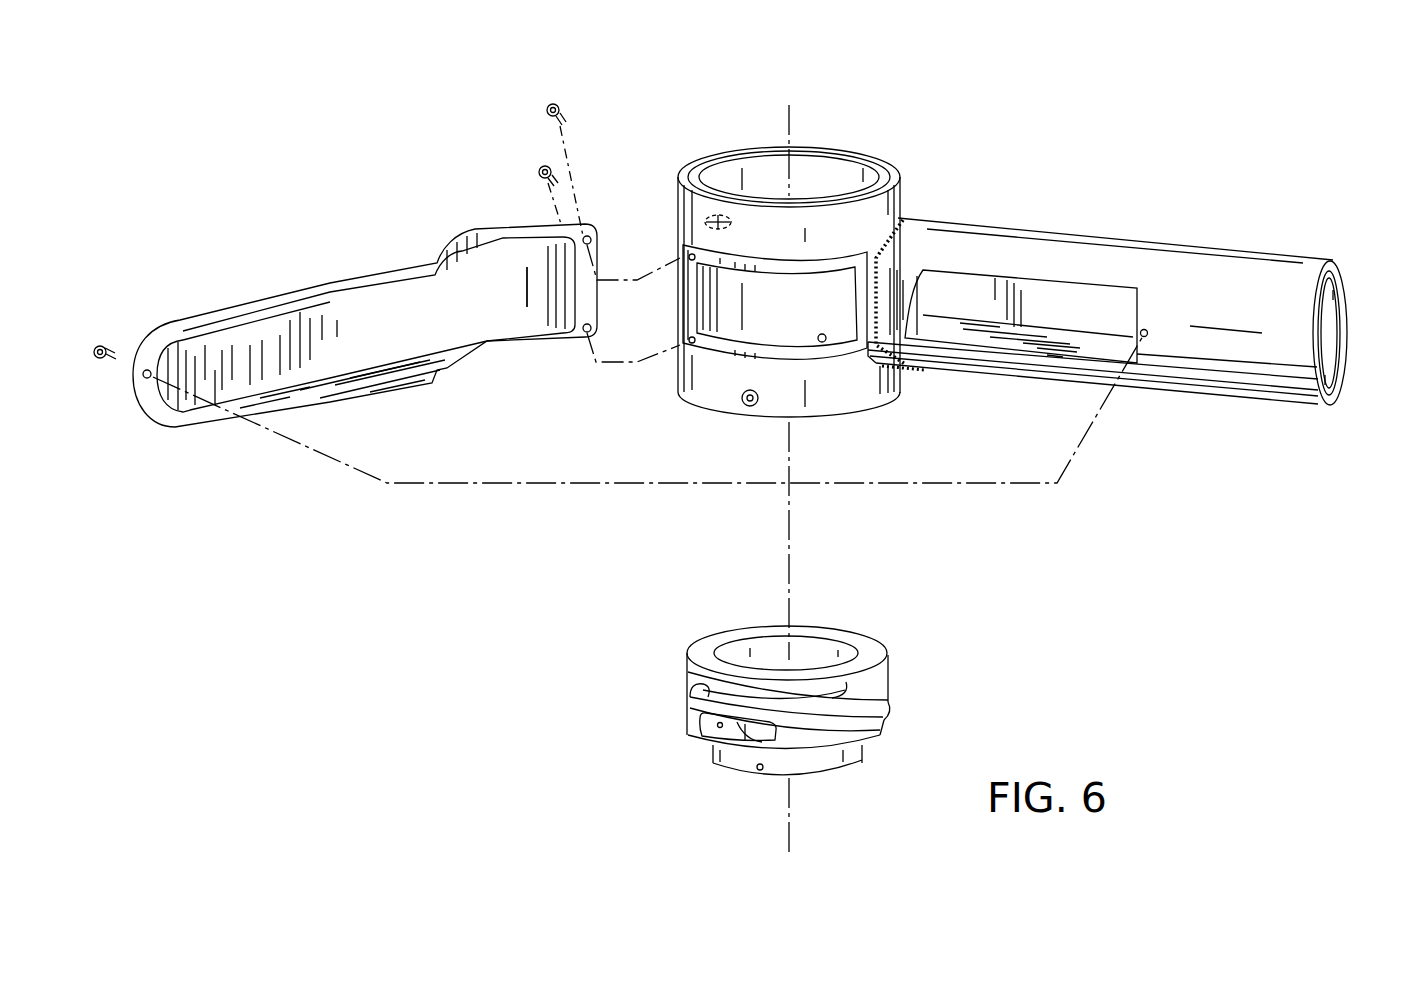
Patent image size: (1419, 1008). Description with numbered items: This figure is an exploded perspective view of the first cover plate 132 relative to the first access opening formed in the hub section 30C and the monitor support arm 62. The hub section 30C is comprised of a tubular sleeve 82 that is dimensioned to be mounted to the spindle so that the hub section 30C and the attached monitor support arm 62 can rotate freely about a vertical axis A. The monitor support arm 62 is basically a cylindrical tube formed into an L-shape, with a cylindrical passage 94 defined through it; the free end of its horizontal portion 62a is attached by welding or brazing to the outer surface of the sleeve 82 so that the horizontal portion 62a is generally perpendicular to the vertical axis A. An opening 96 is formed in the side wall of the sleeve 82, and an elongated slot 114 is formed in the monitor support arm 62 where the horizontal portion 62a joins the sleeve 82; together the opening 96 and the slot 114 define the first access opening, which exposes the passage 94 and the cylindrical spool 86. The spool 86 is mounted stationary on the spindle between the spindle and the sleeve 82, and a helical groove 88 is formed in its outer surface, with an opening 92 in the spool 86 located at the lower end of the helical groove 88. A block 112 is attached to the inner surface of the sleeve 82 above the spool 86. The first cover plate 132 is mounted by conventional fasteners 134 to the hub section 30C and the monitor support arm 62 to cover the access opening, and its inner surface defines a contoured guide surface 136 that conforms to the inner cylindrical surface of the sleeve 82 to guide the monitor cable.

The vertical axis A is at (793, 124).
The hub section 30C is at (906, 184).
The block 112 is at (722, 212).
The opening 96 is at (733, 332).
The tubular sleeve 82 is at (890, 395).
The monitor support arm 62 is at (1246, 247).
The horizontal portion 62a is at (1106, 245).
The cylindrical passage 94 is at (1327, 333).
The elongated slot 114 is at (1050, 292).
The first cover plate 132 is at (349, 268).
The guide surface 136 is at (272, 368).
The fasteners 134 is at (104, 340).
The cylindrical spool 86 is at (890, 641).
The helical groove 88 is at (700, 690).
The opening 92 is at (752, 735).